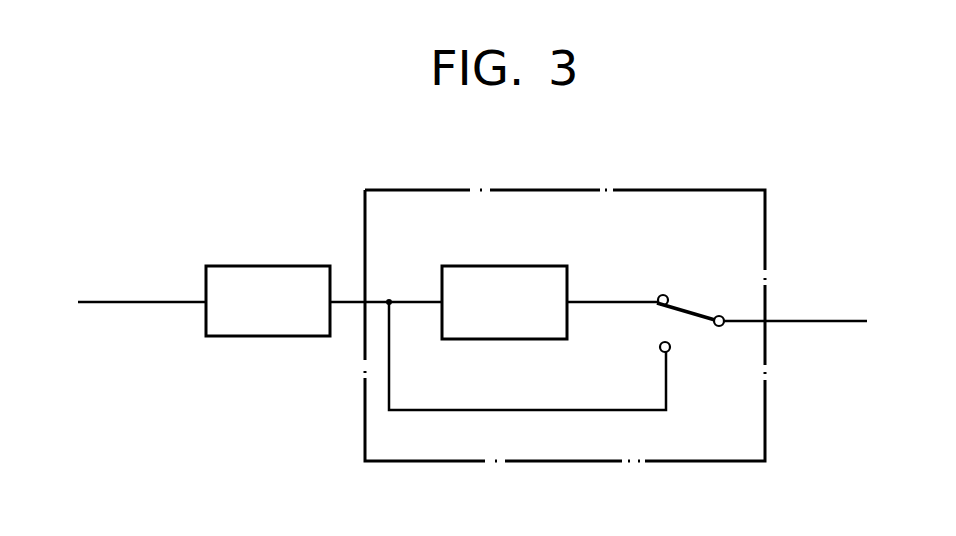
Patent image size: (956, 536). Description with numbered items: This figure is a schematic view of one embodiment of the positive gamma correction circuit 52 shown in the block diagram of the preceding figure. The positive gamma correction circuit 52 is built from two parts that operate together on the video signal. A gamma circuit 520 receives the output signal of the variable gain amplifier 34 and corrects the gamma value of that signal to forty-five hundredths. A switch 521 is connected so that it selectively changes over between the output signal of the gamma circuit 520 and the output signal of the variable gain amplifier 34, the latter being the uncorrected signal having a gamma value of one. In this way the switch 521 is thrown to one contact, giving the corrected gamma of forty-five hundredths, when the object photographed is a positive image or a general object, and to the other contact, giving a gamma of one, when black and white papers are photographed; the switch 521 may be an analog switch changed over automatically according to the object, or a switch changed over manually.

The variable gain amplifier 34 is at (276, 266).
The positive gamma correction circuit 52 is at (647, 190).
The gamma circuit 520 is at (514, 266).
The switch 521 is at (689, 301).